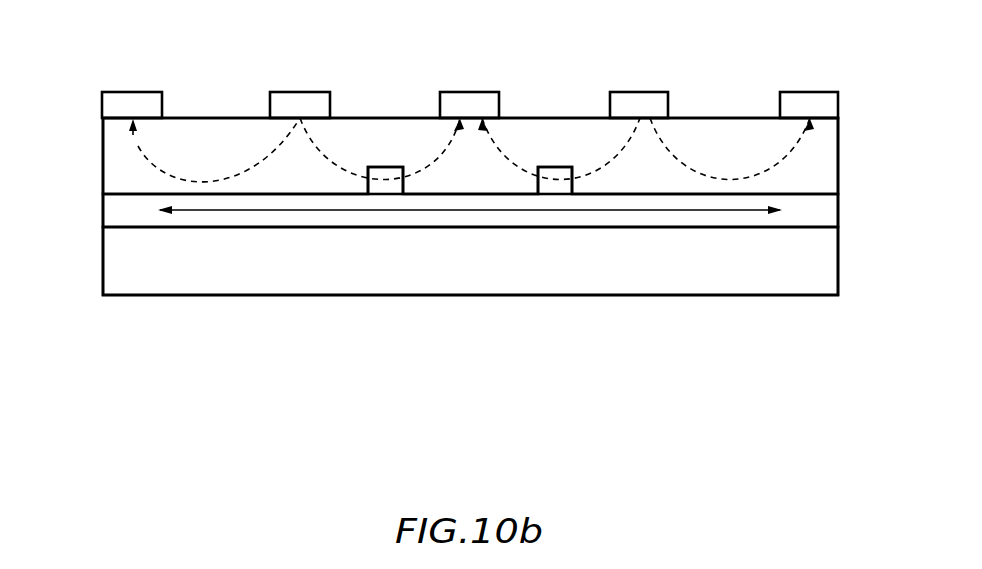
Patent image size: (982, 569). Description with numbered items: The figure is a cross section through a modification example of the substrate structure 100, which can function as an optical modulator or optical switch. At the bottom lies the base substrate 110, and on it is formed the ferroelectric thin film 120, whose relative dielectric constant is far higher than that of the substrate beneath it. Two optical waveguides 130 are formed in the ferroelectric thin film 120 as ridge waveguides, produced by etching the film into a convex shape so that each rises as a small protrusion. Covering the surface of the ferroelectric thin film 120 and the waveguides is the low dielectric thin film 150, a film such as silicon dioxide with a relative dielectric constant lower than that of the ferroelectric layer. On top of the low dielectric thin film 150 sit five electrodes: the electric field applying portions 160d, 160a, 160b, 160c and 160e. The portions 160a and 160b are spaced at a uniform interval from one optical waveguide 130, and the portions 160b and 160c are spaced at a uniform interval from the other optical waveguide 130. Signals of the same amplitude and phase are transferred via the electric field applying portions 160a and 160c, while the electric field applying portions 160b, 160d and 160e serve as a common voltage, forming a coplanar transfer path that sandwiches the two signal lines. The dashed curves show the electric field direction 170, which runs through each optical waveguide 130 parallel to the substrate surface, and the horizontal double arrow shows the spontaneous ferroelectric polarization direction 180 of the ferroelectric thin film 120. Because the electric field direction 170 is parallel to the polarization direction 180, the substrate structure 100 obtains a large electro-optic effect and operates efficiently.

The substrate structure 100 is at (453, 443).
The base substrate 110 is at (838, 258).
The ferroelectric thin film 120 is at (838, 209).
The optical waveguide 130 is at (386, 192).
The low dielectric thin film 150 is at (838, 153).
The electric field applying portion 160a is at (300, 92).
The electric field applying portion 160b is at (470, 92).
The electric field applying portion 160c is at (640, 92).
The electric field applying portion 160d is at (133, 92).
The electric field applying portion 160e is at (810, 92).
The electric field direction 170 is at (134, 148).
The spontaneous ferroelectric polarization direction 180 is at (232, 221).